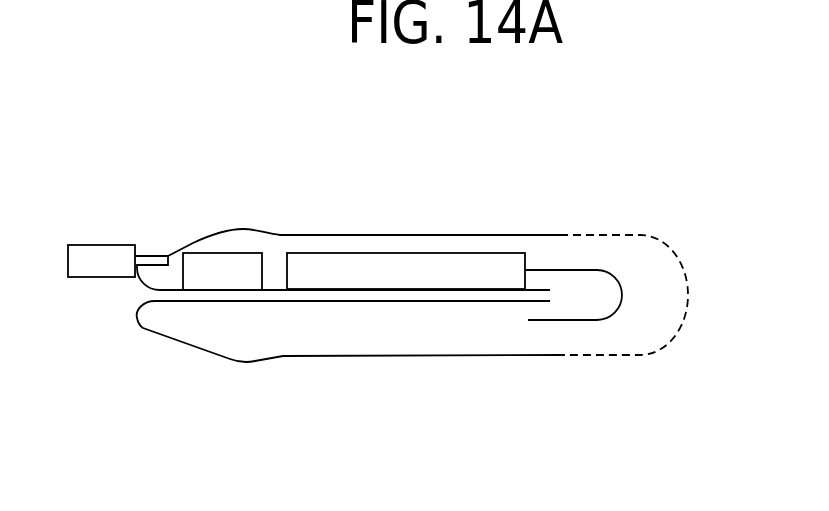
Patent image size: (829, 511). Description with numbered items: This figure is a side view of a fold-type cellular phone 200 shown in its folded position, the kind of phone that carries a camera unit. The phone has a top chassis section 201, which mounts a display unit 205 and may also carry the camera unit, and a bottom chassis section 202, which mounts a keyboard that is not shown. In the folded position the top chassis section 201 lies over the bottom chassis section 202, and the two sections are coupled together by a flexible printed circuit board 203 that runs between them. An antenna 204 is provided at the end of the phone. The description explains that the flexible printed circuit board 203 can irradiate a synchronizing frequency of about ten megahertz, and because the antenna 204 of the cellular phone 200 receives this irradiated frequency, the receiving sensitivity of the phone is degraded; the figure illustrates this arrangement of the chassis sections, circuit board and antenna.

The cellular phone 200 is at (215, 139).
The top chassis section 201 is at (318, 235).
The bottom chassis section 202 is at (355, 356).
The flexible printed circuit board 203 is at (585, 270).
The antenna 204 is at (108, 255).
The display unit 205 is at (461, 263).